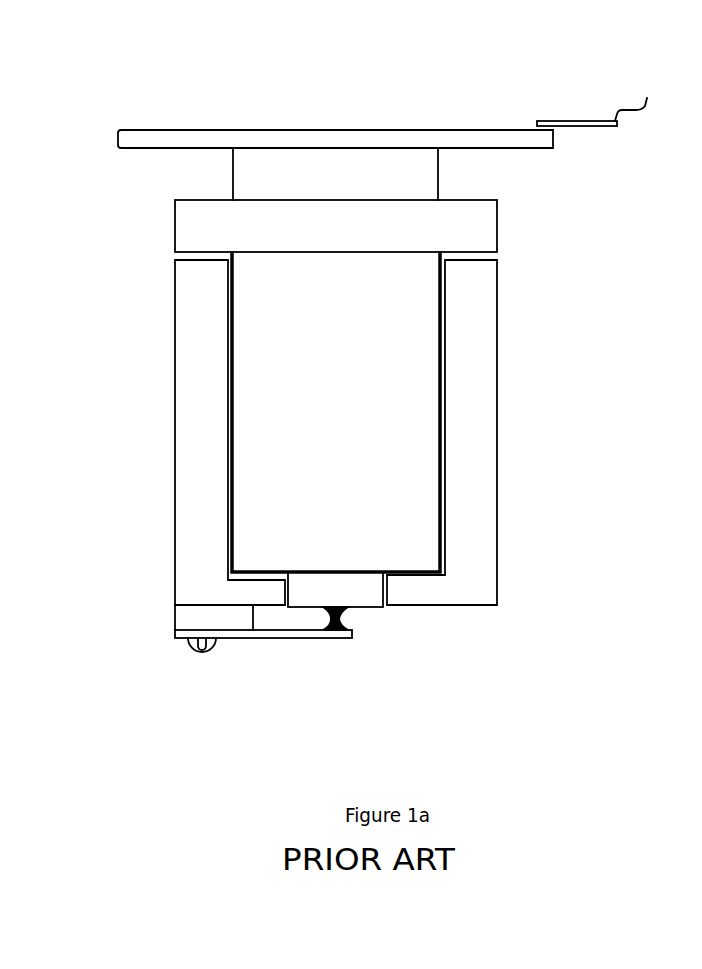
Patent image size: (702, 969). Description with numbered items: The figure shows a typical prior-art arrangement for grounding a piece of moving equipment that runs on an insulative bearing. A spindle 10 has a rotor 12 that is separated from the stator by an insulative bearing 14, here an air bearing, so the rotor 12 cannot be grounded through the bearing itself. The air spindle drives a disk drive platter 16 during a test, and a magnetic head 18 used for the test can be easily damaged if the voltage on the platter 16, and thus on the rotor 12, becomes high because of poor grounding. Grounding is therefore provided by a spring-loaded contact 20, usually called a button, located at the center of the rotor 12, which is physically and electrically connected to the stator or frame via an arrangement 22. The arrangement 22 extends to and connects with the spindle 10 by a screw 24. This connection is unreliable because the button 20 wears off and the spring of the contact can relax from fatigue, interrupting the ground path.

The spindle 10 is at (392, 415).
The rotor 12 is at (415, 500).
The insulative bearing 14 is at (452, 433).
The disk drive platter 16 is at (328, 129).
The magnetic head 18 is at (570, 120).
The spring-loaded contact 20 is at (353, 608).
The arrangement 22 is at (338, 638).
The screw 24 is at (215, 648).